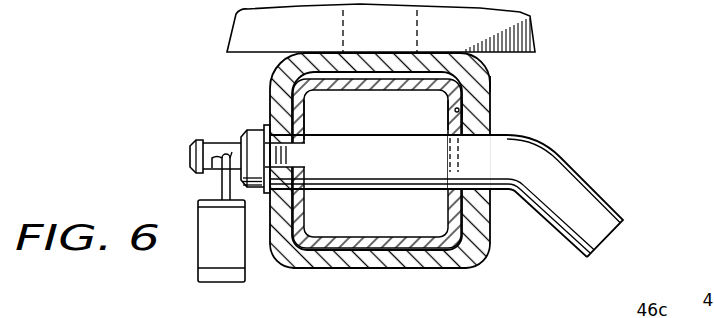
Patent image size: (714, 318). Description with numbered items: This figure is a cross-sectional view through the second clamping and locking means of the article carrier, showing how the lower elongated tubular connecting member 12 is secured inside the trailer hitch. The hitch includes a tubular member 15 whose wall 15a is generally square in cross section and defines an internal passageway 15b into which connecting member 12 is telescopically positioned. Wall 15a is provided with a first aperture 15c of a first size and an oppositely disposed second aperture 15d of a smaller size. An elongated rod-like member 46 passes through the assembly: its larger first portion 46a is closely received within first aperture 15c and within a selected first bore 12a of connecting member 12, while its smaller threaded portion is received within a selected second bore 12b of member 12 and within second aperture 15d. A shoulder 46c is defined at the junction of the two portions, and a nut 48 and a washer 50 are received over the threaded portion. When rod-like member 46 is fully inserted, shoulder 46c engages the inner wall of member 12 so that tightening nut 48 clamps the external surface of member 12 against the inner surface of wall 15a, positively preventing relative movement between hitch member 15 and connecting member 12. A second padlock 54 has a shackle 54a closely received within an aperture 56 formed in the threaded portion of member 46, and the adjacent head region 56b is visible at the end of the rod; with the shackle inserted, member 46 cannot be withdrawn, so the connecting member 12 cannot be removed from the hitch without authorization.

The tubular connecting member 12 is at (429, 243).
The first bore 12a is at (451, 139).
The second bore 12b is at (305, 140).
The tubular member 15 is at (374, 270).
The wall 15a is at (491, 83).
The internal passageway 15b is at (460, 110).
The first aperture 15c is at (488, 145).
The second aperture 15d is at (306, 165).
The rod-like member 46 is at (456, 179).
The first portion 46a is at (332, 133).
The shoulder 46c is at (302, 191).
The nut 48 is at (244, 131).
The washer 50 is at (265, 123).
The second padlock 54 is at (201, 257).
The shackle 54a is at (221, 191).
The aperture 56 is at (184, 142).
The bolt head 56b is at (198, 141).